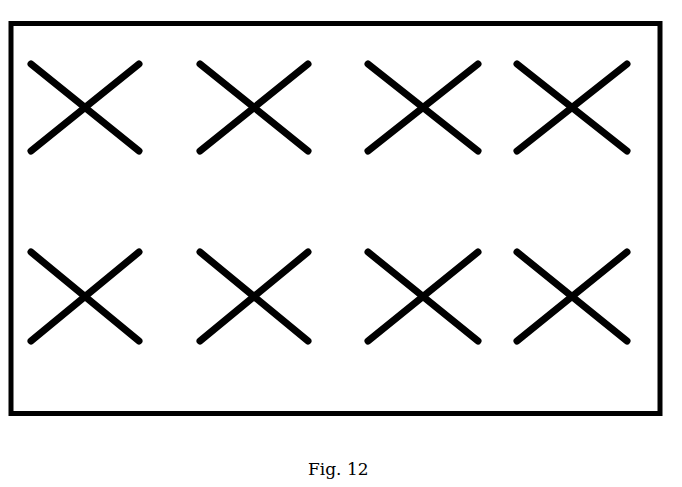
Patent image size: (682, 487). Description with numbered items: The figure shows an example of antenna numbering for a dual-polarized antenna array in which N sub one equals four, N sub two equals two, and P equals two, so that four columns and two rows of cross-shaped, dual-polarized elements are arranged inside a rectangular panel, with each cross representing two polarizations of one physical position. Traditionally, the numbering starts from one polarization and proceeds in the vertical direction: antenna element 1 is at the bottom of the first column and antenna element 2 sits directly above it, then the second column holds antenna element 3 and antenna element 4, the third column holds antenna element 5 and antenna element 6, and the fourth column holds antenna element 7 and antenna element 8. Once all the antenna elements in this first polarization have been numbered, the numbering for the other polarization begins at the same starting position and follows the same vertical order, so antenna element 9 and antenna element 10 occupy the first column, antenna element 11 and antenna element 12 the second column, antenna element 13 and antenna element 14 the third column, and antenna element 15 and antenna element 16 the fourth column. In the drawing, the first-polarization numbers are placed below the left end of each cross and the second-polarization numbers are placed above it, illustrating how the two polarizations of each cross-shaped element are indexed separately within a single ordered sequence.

The antenna element 1 is at (85, 310).
The antenna element 2 is at (85, 122).
The antenna element 3 is at (254, 314).
The antenna element 4 is at (254, 126).
The antenna element 5 is at (423, 314).
The antenna element 6 is at (423, 126).
The antenna element 7 is at (572, 315).
The antenna element 8 is at (572, 126).
The antenna element 9 is at (84, 282).
The antenna element 10 is at (84, 92).
The antenna element 11 is at (254, 284).
The antenna element 12 is at (254, 95).
The antenna element 13 is at (423, 284).
The antenna element 14 is at (423, 95).
The antenna element 15 is at (572, 283).
The antenna element 16 is at (572, 94).